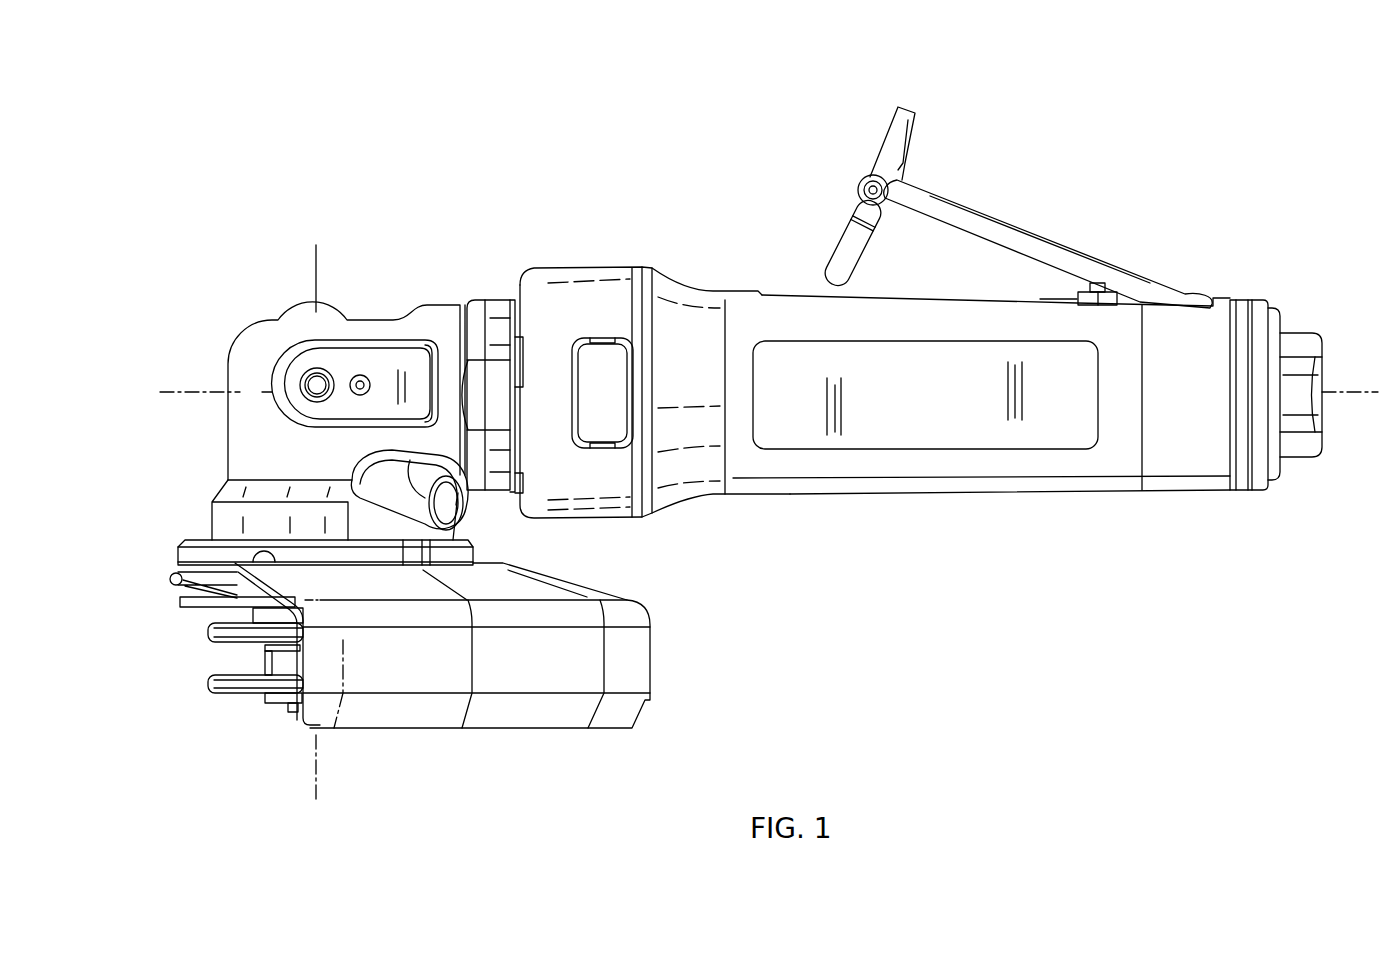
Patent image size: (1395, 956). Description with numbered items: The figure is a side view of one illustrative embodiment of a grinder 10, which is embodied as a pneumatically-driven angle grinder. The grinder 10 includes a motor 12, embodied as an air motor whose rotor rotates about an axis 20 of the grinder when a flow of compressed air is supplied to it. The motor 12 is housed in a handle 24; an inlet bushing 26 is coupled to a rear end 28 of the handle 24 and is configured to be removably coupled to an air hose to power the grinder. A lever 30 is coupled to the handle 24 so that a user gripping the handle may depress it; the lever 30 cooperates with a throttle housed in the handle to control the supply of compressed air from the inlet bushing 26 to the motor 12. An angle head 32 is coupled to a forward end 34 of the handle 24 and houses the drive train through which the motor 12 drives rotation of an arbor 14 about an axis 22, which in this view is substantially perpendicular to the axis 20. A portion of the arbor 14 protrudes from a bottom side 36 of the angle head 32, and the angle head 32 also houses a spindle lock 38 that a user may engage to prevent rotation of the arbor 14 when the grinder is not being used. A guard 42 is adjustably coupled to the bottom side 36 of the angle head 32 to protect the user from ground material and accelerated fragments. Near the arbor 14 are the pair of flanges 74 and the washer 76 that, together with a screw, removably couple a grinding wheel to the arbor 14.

The grinder 10 is at (597, 104).
The motor 12 is at (803, 410).
The arbor 14 is at (432, 680).
The axis 20 is at (200, 392).
The axis 22 is at (300, 265).
The handle 24 is at (1022, 489).
The inlet bushing 26 is at (1298, 342).
The rear end 28 is at (1291, 473).
The lever 30 is at (997, 210).
The angle head 32 is at (260, 340).
The forward end 34 is at (513, 272).
The bottom side 36 is at (212, 553).
The spindle lock 38 is at (462, 508).
The guard 42 is at (637, 672).
The flanges 74 is at (208, 630).
The washer 76 is at (284, 717).